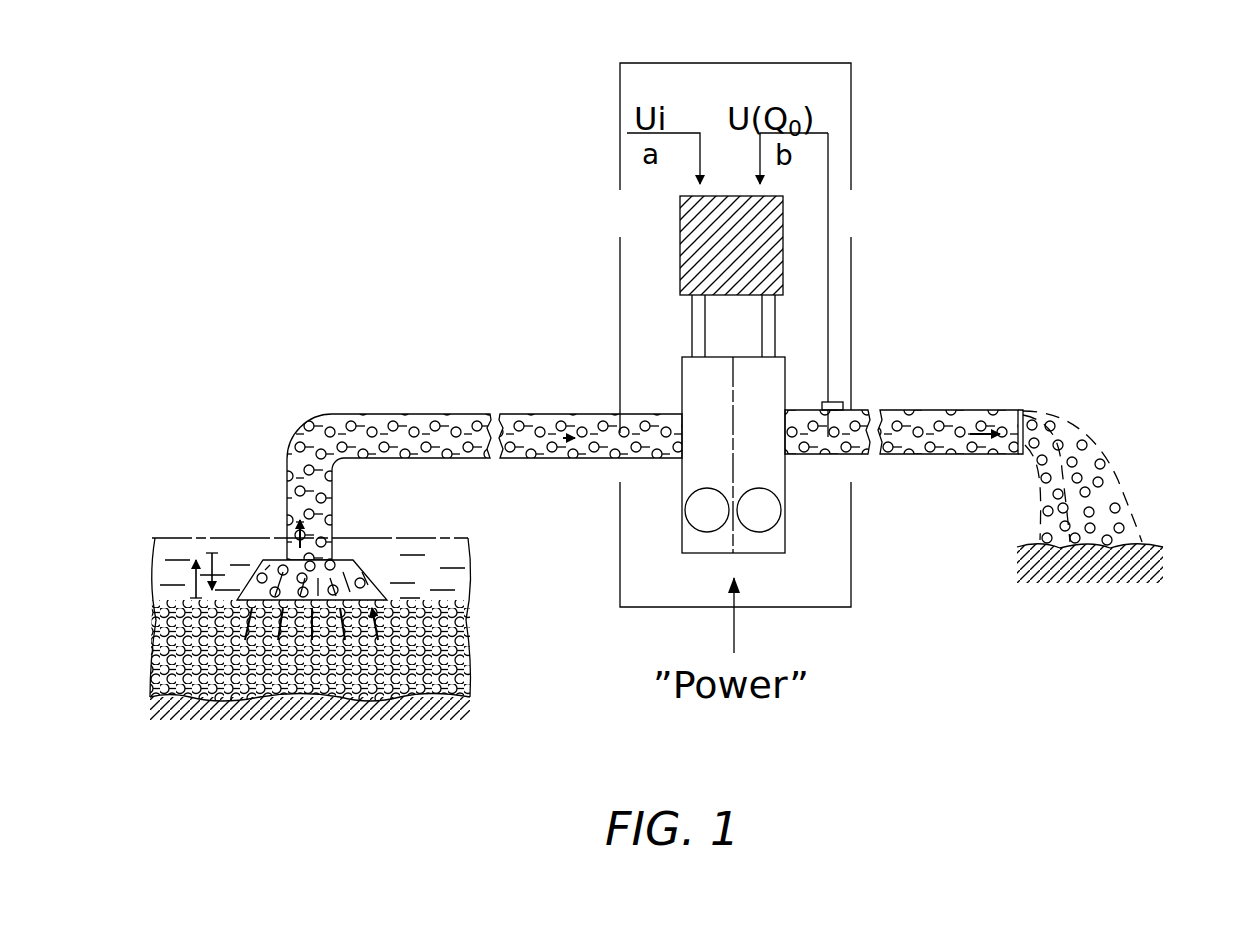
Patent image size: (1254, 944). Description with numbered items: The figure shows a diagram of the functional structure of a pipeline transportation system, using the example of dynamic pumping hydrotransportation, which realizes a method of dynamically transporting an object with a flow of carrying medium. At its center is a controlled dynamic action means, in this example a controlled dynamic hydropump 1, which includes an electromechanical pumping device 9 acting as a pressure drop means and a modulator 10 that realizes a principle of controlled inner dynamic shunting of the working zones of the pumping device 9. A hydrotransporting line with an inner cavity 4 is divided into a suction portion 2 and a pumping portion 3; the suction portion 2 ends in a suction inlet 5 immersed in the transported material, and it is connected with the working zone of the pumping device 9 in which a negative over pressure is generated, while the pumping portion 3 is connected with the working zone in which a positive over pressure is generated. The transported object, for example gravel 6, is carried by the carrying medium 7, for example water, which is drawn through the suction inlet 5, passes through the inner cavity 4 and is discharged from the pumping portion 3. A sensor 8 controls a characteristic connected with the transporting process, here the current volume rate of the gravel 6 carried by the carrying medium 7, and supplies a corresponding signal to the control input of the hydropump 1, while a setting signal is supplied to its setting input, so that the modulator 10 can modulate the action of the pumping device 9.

The controlled dynamic hydropump 1 is at (851, 88).
The suction portion 2 is at (435, 416).
The pumping portion 3 is at (985, 410).
The inner cavity 4 is at (340, 470).
The suction inlet 5 is at (367, 567).
The gravel 6 is at (455, 668).
The carrying medium 7 is at (470, 572).
The sensor 8 is at (836, 401).
The electromechanical pumping device 9 is at (775, 372).
The modulator 10 is at (770, 247).